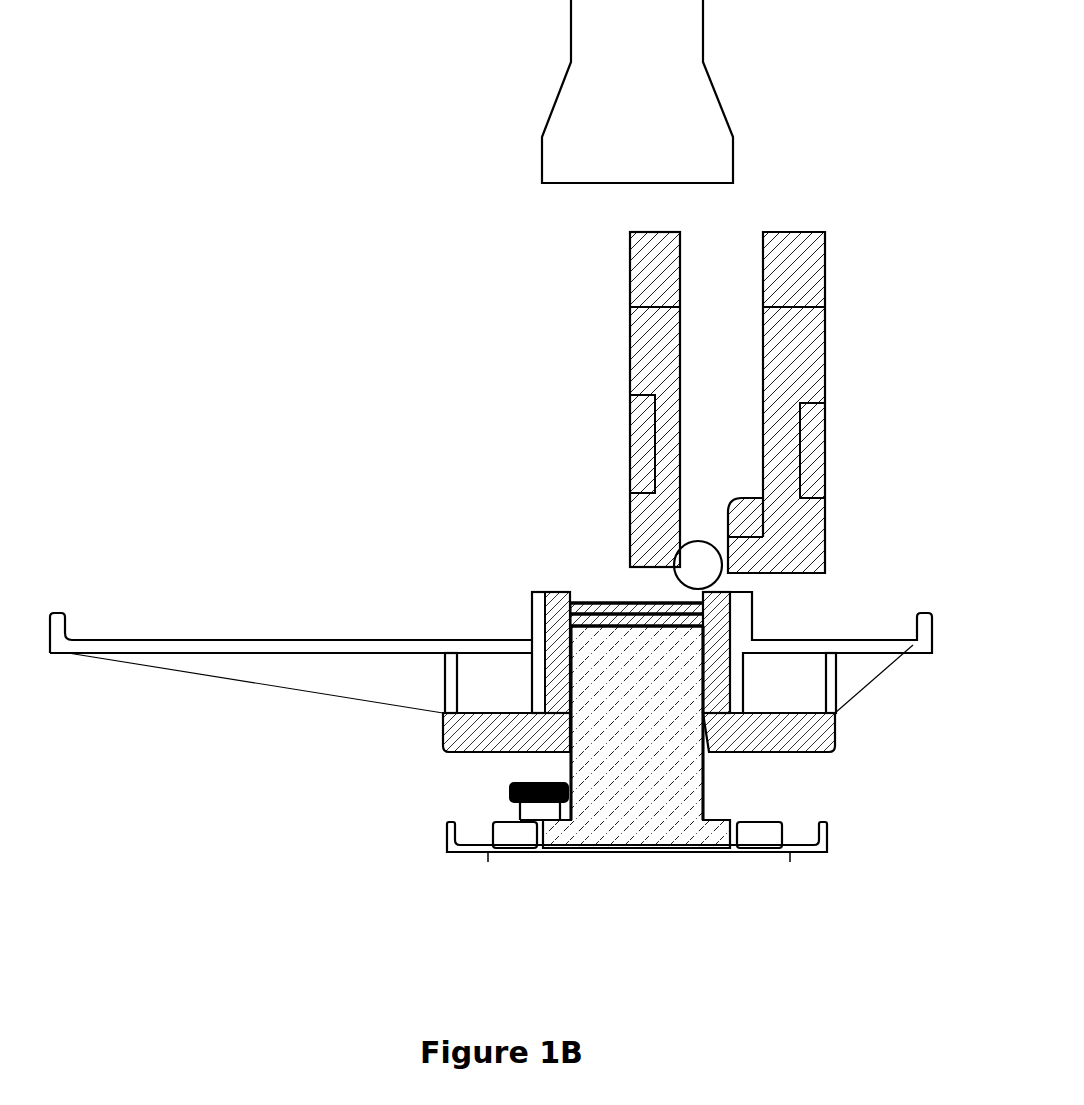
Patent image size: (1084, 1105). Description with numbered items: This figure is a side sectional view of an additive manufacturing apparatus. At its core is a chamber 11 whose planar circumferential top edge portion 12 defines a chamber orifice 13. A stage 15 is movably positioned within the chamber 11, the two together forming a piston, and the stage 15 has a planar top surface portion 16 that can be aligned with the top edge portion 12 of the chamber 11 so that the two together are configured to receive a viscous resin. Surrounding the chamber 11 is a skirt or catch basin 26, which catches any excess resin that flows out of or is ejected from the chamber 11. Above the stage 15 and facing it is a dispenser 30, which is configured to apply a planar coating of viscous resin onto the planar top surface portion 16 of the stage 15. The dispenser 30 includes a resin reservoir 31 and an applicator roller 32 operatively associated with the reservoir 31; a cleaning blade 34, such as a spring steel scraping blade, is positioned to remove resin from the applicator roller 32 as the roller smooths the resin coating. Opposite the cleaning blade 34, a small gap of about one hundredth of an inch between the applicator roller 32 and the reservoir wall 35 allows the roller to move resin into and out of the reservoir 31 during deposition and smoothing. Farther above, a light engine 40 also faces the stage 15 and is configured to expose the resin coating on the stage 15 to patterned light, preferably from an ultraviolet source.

The chamber 11 is at (491, 700).
The planar circumferential top edge portion 12 is at (553, 593).
The chamber orifice 13 is at (595, 624).
The stage 15 is at (624, 726).
The planar top surface portion 16 is at (625, 603).
The skirt or catch basin 26 is at (270, 640).
The dispenser 30 is at (737, 402).
The resin reservoir 31 is at (700, 380).
The applicator roller 32 is at (704, 566).
The cleaning blade 34 is at (722, 537).
The reservoir wall 35 is at (760, 345).
The light engine 40 is at (626, 90).